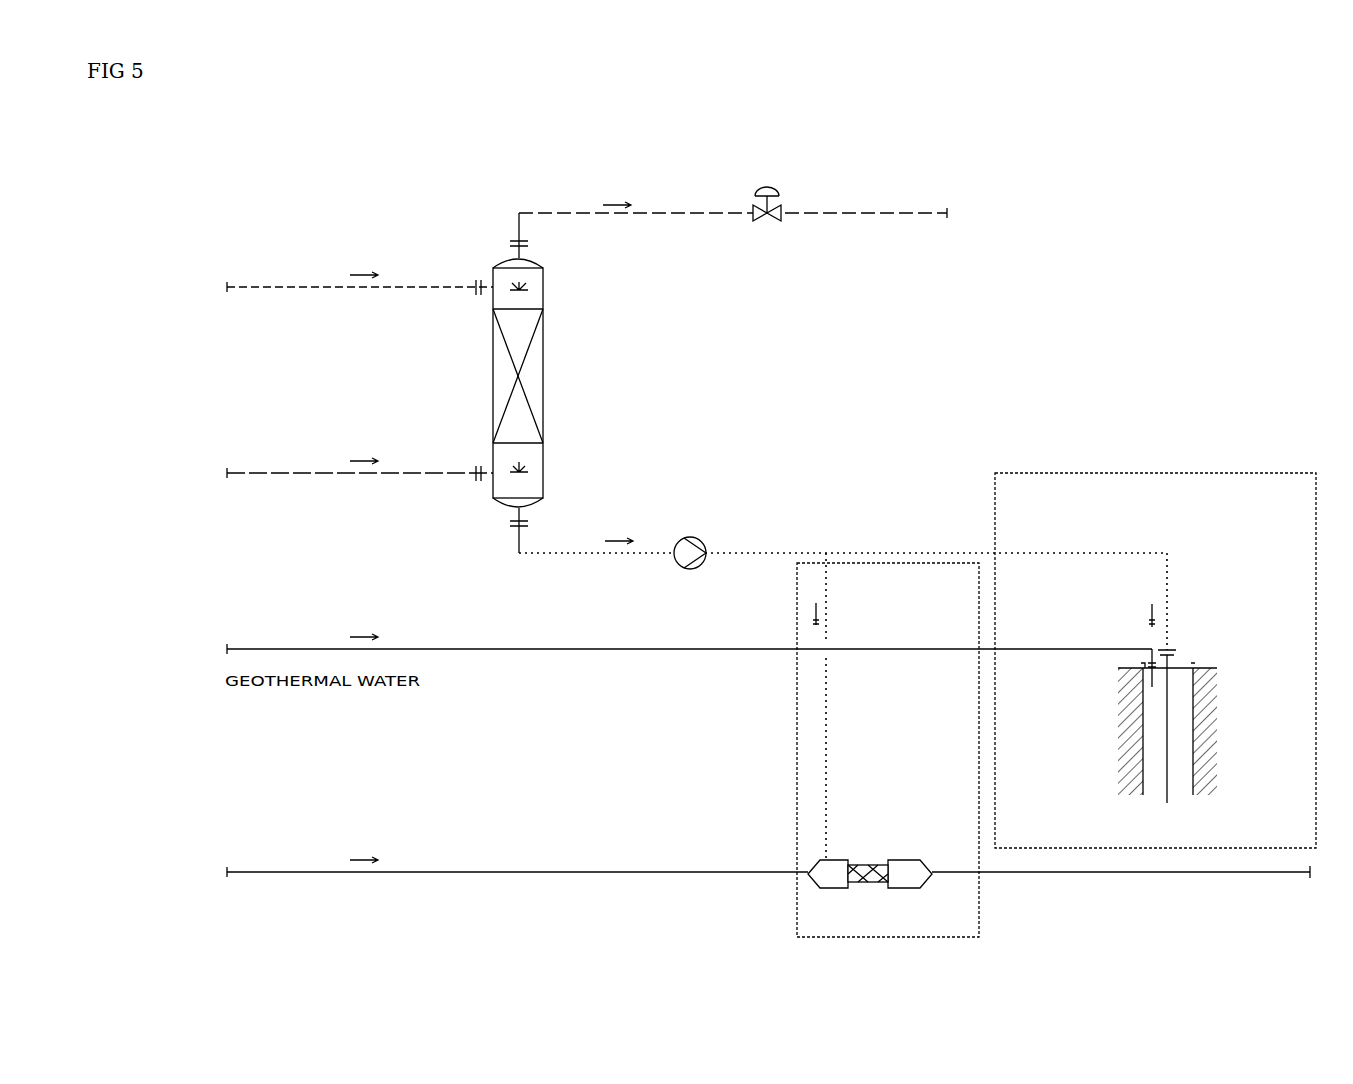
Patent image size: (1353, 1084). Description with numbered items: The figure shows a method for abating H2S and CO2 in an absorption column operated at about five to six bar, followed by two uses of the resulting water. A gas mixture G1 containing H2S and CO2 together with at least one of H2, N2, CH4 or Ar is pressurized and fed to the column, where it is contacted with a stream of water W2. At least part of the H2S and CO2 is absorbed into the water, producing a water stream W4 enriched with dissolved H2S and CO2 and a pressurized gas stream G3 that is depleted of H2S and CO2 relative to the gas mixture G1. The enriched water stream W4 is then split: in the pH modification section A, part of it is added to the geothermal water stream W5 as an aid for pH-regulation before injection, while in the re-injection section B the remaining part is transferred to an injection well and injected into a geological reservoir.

The water stream W2 is at (359, 317).
The gas mixture G1 is at (359, 501).
The pressurized gas stream G3 is at (733, 220).
The water stream enriched with dissolved H2S and CO2 W4 is at (835, 689).
The water stream W5 is at (767, 884).
The pH modification A is at (957, 669).
The re-injection of gases B is at (1110, 640).